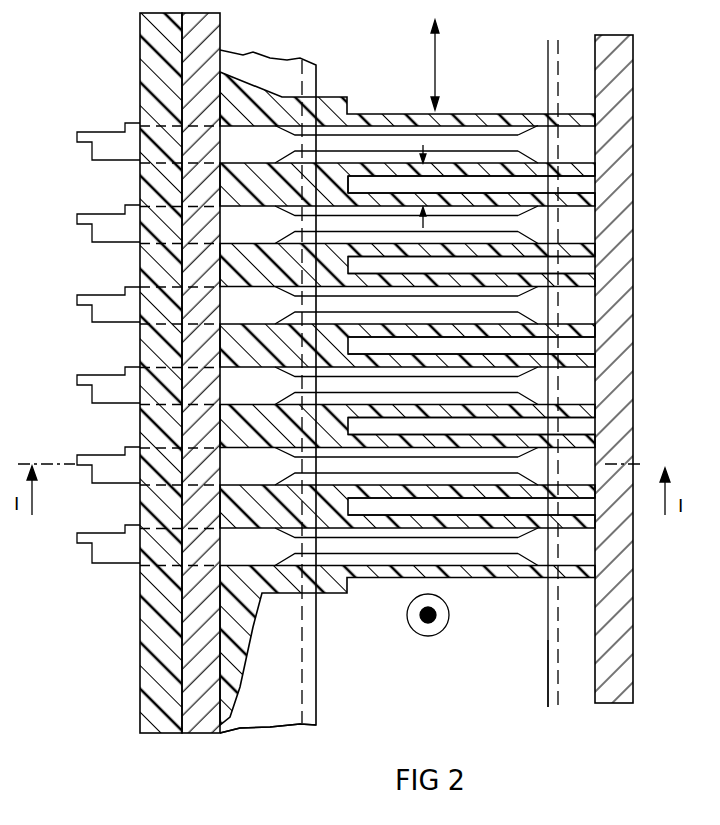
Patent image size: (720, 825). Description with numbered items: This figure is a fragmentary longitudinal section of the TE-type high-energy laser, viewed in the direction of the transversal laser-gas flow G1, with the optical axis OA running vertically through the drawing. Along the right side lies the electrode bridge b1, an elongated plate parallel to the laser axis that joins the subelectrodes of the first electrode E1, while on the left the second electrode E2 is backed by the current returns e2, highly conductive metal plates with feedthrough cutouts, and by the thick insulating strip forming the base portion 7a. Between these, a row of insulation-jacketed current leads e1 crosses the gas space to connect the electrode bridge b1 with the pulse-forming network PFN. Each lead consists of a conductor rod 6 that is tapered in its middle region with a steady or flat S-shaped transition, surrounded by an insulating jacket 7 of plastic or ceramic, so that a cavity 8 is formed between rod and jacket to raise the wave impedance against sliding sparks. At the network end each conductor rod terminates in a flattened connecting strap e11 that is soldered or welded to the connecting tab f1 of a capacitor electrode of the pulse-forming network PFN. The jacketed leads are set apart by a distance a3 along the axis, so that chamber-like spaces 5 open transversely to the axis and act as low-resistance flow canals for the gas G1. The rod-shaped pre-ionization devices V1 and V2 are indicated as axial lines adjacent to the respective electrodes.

The spaces 5 is at (648, 355).
The conductor rods 6 is at (513, 143).
The insulating jacket 7 is at (407, 398).
The cavities 8 is at (483, 128).
The base portion 7a is at (162, 723).
The distance a3 is at (425, 184).
The electrode bridge b1 is at (618, 632).
The current leads e1 is at (358, 388).
The connecting strap e11 is at (112, 158).
The current returns e2 is at (202, 720).
The first electrode E1 is at (567, 677).
The second electrode E2 is at (280, 713).
The connecting tab f1 is at (84, 223).
The transversal gas flow G1 is at (433, 635).
The optical axis OA is at (434, 65).
The pulse-forming network PFN is at (148, 373).
The pre-ionization device V1 is at (557, 647).
The pre-ionization device V2 is at (302, 658).